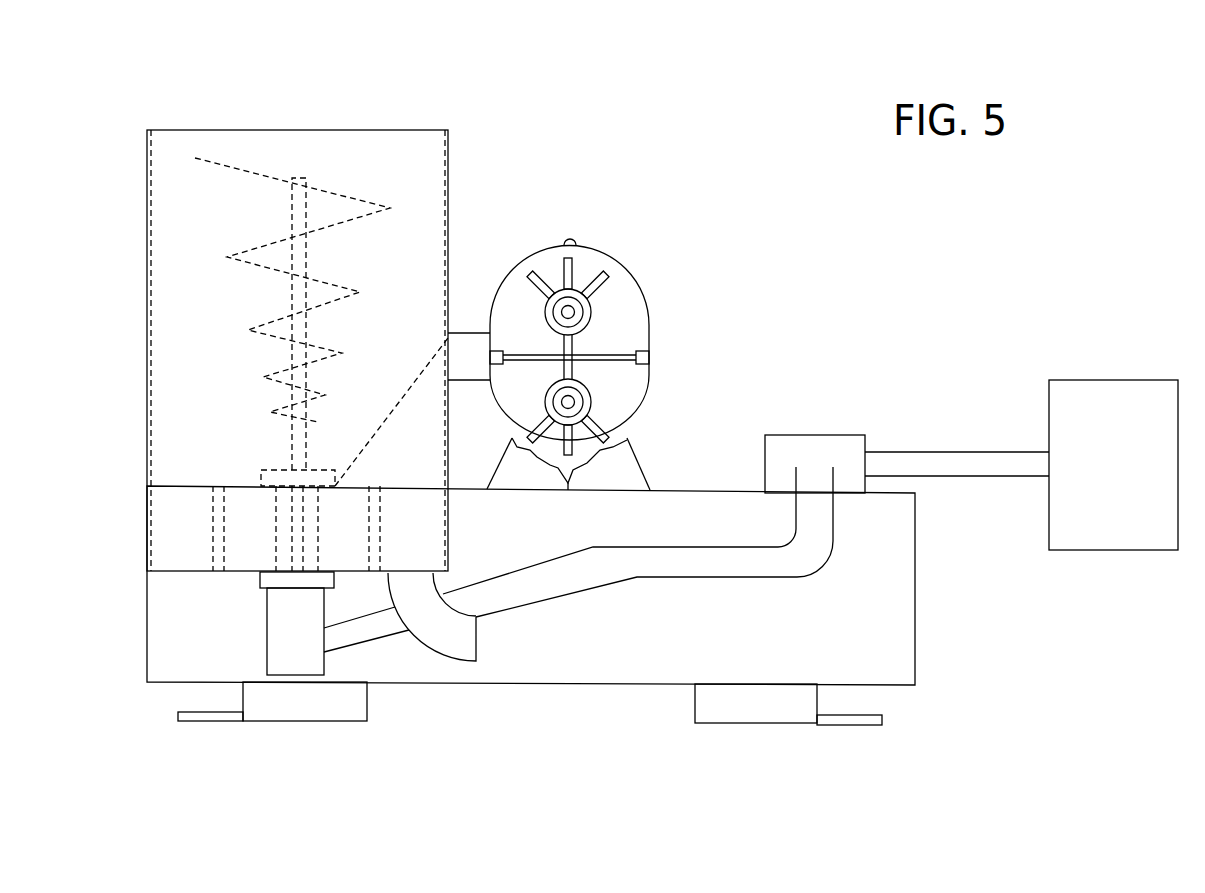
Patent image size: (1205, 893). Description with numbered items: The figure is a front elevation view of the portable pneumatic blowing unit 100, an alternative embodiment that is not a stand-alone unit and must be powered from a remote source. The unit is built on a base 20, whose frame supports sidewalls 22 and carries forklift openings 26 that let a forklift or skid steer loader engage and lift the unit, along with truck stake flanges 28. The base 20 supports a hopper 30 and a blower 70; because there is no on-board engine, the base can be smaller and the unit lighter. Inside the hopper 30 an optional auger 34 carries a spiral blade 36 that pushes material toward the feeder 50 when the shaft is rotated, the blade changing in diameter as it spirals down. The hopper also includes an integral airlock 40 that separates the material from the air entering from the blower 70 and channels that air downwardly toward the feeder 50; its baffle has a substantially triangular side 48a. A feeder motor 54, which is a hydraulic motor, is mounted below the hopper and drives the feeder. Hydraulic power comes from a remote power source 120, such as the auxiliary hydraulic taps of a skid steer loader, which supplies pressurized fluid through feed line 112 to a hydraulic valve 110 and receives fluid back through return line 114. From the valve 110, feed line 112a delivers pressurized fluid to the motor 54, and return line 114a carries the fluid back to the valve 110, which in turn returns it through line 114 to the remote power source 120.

The portable pneumatic blowing unit 100 is at (262, 42).
The hopper 30 is at (147, 130).
The spiral blade 36 is at (238, 168).
The auger 34 is at (368, 302).
The airlock 40 is at (423, 372).
The triangular shaped side 48a is at (426, 459).
The feeder 50 is at (217, 485).
The sidewalls 22 is at (498, 527).
The base 20 is at (145, 684).
The feeder motor 54 is at (283, 620).
The feed line 112a is at (686, 546).
The return line 114a is at (745, 580).
The hydraulic valve 110 is at (815, 434).
The feed line 112 is at (948, 451).
The return line 114 is at (993, 478).
The remote power source 120 is at (1112, 378).
The blower 70 is at (642, 280).
The forklift openings 26 is at (368, 703).
The truck stake flanges 28 is at (205, 722).